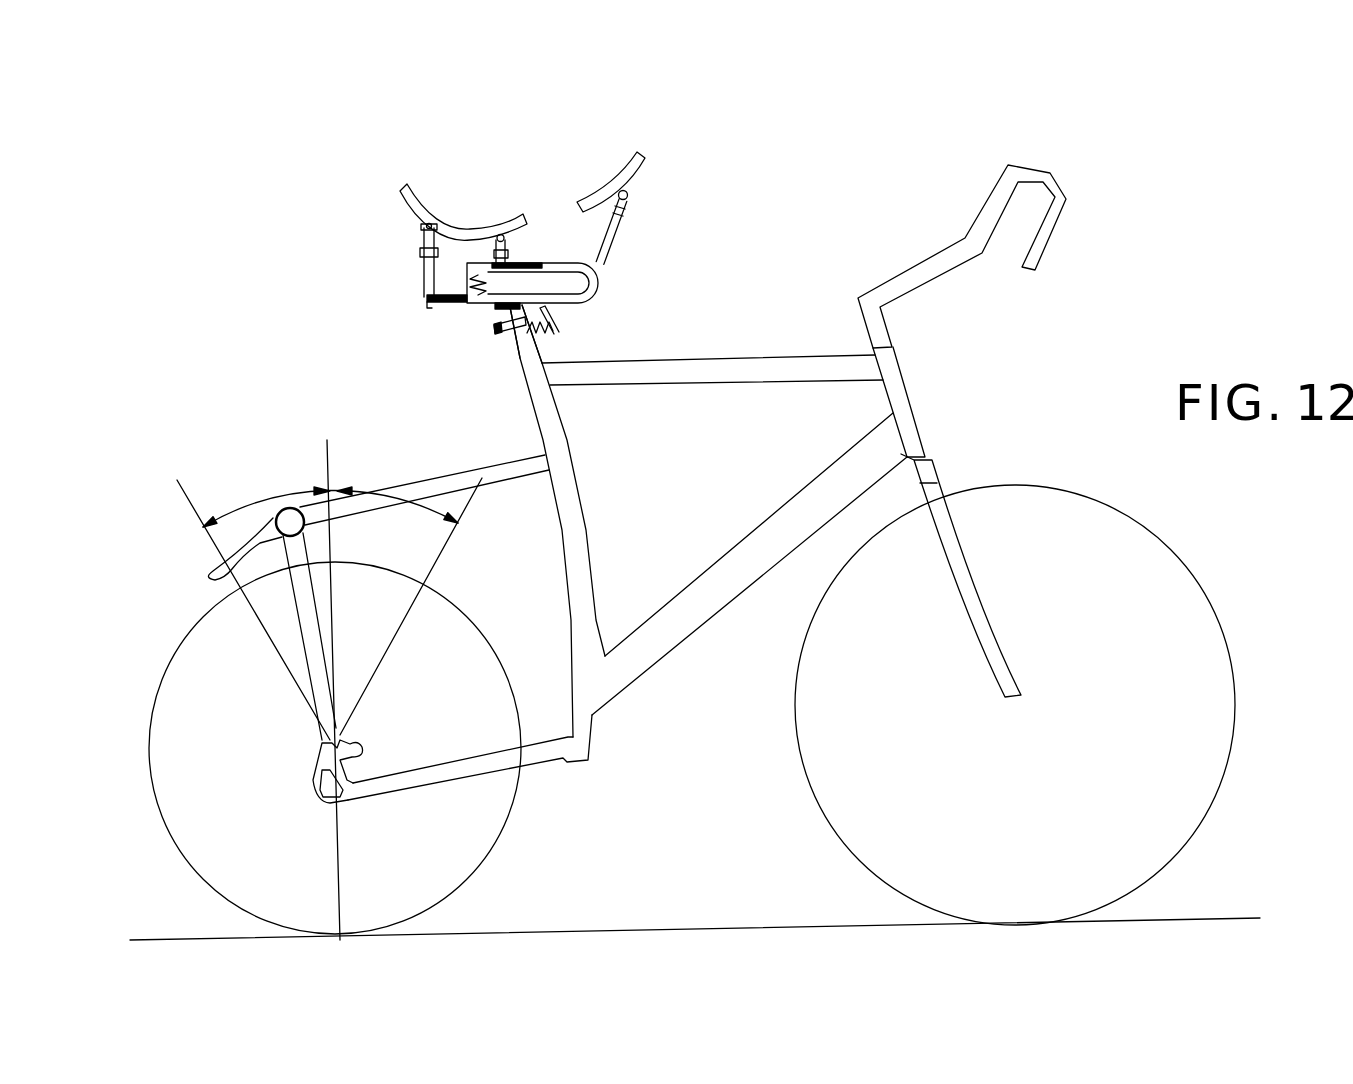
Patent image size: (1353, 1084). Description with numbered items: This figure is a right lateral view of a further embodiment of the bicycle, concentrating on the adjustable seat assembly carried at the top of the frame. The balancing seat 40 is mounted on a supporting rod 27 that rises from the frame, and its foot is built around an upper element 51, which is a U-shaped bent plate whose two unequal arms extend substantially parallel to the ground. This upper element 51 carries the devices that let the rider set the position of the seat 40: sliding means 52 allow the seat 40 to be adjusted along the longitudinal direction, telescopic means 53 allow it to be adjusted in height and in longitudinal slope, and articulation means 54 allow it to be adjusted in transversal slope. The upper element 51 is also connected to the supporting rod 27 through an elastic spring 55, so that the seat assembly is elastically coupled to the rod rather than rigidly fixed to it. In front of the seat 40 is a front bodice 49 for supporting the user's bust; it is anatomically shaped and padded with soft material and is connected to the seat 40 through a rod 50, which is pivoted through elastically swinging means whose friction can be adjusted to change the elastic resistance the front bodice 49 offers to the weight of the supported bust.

The supporting rod 27 is at (513, 340).
The balancing seat 40 is at (455, 228).
The front bodice 49 is at (605, 197).
The rod 50 is at (610, 248).
The upper element 51 is at (603, 283).
The sliding means 52 is at (528, 263).
The telescopic means 53 is at (495, 255).
The articulation means 54 is at (500, 237).
The elastic spring 55 is at (540, 330).